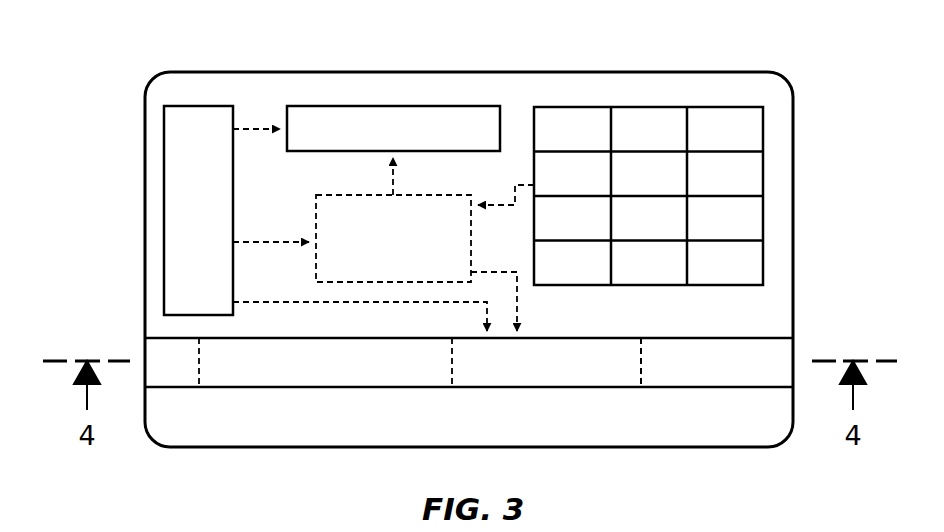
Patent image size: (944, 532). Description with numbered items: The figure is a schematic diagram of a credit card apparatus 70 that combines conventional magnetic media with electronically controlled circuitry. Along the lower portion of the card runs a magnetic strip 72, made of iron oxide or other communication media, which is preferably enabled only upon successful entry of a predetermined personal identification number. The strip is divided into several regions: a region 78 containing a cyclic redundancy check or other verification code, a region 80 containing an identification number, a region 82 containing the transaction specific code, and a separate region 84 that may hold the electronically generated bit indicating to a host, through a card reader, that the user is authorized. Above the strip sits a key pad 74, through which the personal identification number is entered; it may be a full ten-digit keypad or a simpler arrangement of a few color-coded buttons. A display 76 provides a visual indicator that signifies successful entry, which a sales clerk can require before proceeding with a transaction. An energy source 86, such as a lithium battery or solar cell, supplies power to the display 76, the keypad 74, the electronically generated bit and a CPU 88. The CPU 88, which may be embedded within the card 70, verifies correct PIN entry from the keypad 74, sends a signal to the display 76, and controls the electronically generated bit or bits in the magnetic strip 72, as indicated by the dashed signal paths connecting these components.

The credit card apparatus 70 is at (118, 68).
The magnetic strip 72 is at (283, 388).
The key pad 74 is at (628, 106).
The display 76 is at (368, 106).
The region containing a cyclic redundancy check 78 is at (158, 358).
The region containing an identification number 80 is at (328, 370).
The region containing the transaction specific code 82 is at (515, 370).
The region of the electronically generated bit 84 is at (679, 370).
The energy source 86 is at (165, 155).
The CPU 88 is at (316, 195).